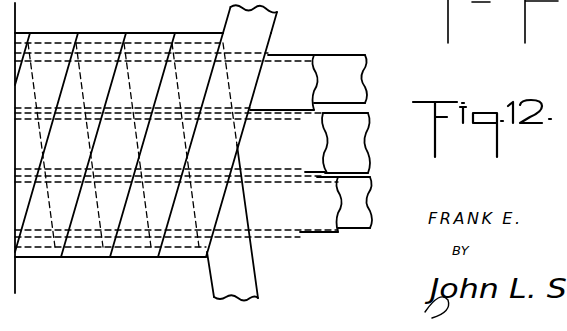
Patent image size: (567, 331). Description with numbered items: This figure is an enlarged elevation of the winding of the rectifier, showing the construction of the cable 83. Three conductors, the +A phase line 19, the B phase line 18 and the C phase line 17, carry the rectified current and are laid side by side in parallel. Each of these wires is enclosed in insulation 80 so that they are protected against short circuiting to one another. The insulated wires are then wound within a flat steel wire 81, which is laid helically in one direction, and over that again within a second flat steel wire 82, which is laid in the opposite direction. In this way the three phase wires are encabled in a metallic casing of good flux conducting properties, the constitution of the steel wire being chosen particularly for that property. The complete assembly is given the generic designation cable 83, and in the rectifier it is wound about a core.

The C phase line 17 is at (357, 200).
The B phase line 18 is at (353, 133).
The +A phase line 19 is at (355, 72).
The insulation 80 is at (298, 68).
The flat steel wire 81 is at (247, 267).
The flat steel wire 82 is at (258, 25).
The cable 83 is at (136, 27).